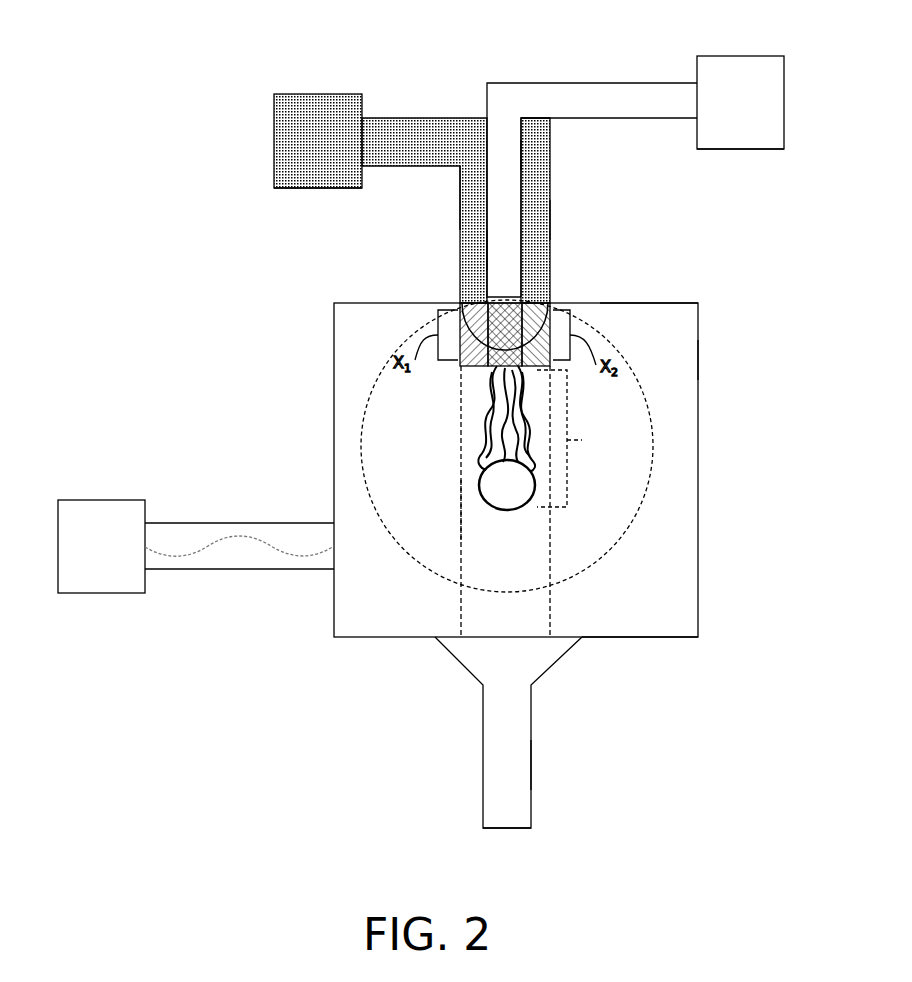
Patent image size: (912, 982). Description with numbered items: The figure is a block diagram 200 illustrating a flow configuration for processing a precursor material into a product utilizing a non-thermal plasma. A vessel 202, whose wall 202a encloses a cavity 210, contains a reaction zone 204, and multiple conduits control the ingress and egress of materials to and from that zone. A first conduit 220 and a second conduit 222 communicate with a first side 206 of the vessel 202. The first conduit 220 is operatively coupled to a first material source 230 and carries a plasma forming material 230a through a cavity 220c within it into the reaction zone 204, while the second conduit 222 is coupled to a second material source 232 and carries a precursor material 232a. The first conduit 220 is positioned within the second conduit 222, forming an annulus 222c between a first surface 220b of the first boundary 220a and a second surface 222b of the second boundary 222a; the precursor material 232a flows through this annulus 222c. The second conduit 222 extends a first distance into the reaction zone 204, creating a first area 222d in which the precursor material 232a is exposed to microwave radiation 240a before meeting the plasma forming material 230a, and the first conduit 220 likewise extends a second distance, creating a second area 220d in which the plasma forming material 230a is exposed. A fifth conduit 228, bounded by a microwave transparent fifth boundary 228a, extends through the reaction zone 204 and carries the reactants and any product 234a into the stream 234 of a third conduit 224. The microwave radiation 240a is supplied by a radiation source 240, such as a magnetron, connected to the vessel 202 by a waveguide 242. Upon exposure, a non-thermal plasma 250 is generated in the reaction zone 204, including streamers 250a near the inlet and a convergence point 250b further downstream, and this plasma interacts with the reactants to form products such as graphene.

The block diagram 200 is at (135, 775).
The vessel 202 is at (698, 388).
The chamber wall 202a is at (698, 360).
The reaction zone 204 is at (607, 548).
The first side 206 is at (645, 303).
The cavity 210 is at (593, 625).
The first conduit 220 is at (520, 270).
The first boundary 220a is at (523, 155).
The first surface 220b is at (523, 223).
The cavity 220c is at (503, 122).
The second area 220d is at (530, 347).
The second conduit 222 is at (460, 274).
The second boundary 222a is at (460, 215).
The second surface 222b is at (460, 187).
The annulus 222c is at (478, 252).
The first area 222d is at (470, 347).
The third conduit 224 is at (483, 730).
The fifth conduit 228 is at (461, 552).
The fifth boundary 228a is at (460, 510).
The first material source 230 is at (740, 56).
The plasma forming material 230a is at (737, 138).
The second material source 232 is at (318, 94).
The precursor material 232a is at (325, 178).
The stream 234 is at (500, 812).
The product 234a is at (513, 762).
The radiation source 240 is at (102, 500).
The microwave radiation 240a is at (237, 535).
The waveguide 242 is at (240, 571).
The non-thermal plasma 250 is at (582, 440).
The streamers 250a is at (480, 437).
The convergence point 250b is at (537, 485).